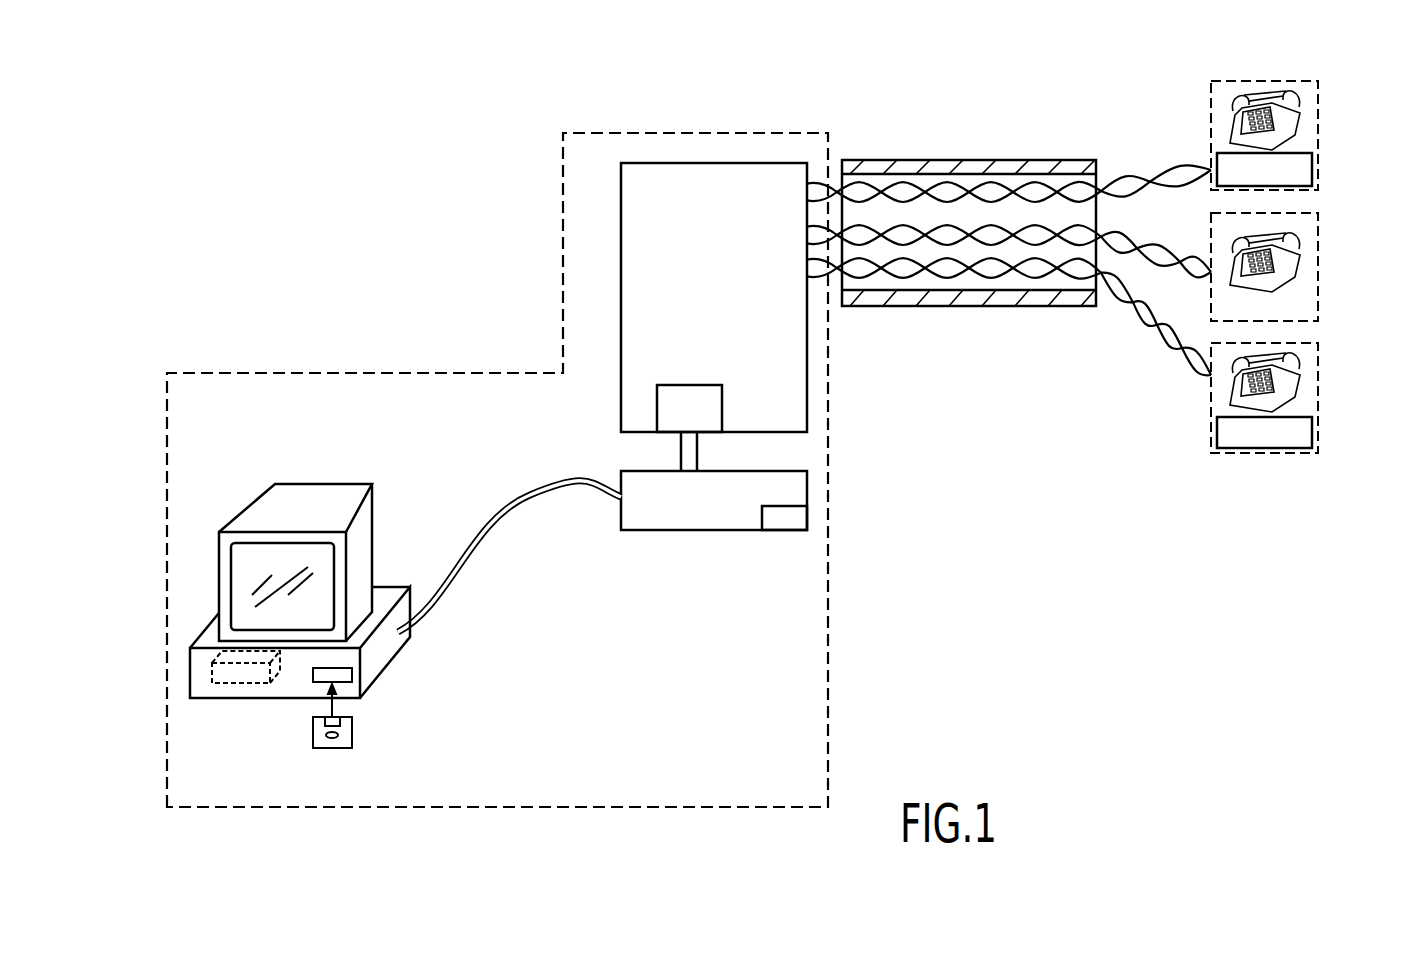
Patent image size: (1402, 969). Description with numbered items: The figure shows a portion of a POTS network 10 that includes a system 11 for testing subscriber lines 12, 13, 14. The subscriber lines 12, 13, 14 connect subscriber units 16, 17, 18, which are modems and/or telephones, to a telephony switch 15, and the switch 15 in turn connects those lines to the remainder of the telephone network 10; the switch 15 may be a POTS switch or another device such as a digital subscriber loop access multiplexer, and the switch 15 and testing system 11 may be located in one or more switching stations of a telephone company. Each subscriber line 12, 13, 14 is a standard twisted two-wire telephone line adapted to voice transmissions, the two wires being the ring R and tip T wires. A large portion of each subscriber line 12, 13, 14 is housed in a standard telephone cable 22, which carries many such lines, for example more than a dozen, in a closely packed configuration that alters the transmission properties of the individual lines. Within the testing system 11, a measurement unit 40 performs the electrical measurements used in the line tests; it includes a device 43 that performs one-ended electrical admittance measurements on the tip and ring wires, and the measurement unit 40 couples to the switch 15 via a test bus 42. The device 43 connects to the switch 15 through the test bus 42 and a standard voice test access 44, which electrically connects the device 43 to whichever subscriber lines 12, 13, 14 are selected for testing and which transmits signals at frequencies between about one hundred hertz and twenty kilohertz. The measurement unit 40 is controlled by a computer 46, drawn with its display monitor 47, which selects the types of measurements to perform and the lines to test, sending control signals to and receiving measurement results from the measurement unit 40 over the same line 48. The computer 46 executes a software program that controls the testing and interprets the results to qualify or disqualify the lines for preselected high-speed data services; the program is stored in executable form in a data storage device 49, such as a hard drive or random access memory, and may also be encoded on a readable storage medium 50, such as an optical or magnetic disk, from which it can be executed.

The POTS network 10 is at (528, 230).
The system for testing subscriber lines 11 is at (828, 578).
The subscriber line 12 is at (1173, 148).
The subscriber line 13 is at (1183, 290).
The subscriber line 14 is at (1147, 370).
The telephony switch 15 is at (699, 323).
The subscriber unit 16 is at (1318, 152).
The subscriber unit 17 is at (1318, 257).
The subscriber unit 18 is at (1318, 355).
The telephone cable 22 is at (958, 160).
The measurement unit 40 is at (727, 533).
The test bus 42 is at (680, 450).
The device for one-ended electrical admittance measurements 43 is at (790, 522).
The voice test access 44 is at (676, 422).
The computer 46 is at (315, 604).
The display monitor 47 is at (262, 567).
The line 48 is at (490, 563).
The data storage device 49 is at (238, 678).
The readable storage medium 50 is at (352, 737).
The ring wire R is at (1123, 195).
The tip wire T is at (1123, 195).